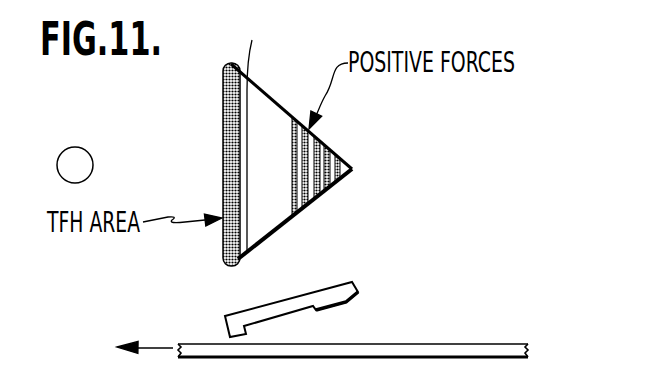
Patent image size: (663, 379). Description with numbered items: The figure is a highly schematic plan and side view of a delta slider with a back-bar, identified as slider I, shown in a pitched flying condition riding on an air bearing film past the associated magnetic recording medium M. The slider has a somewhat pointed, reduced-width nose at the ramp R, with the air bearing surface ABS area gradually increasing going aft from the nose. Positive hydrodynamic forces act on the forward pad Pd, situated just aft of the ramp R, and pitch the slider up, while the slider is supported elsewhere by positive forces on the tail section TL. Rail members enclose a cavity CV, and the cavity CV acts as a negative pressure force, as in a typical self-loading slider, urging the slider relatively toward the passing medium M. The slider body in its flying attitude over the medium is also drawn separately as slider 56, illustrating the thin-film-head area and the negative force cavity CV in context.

The air bearing slider 56 is at (289, 100).
The tail section TL is at (232, 63).
The air bearing surface ABS is at (250, 128).
The ramp R is at (352, 163).
The forward pad Pd is at (333, 191).
The cavity CV is at (300, 226).
The slider I is at (191, 164).
The magnetic recording medium M is at (466, 344).